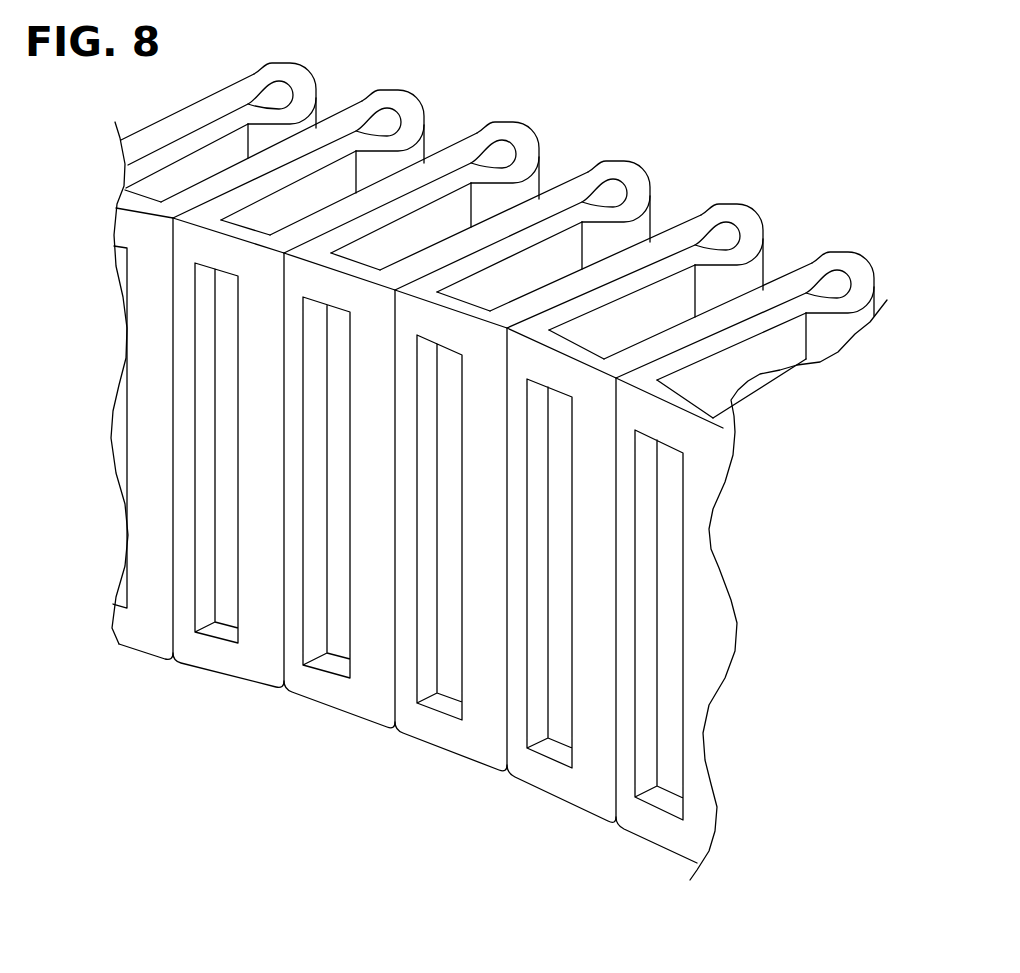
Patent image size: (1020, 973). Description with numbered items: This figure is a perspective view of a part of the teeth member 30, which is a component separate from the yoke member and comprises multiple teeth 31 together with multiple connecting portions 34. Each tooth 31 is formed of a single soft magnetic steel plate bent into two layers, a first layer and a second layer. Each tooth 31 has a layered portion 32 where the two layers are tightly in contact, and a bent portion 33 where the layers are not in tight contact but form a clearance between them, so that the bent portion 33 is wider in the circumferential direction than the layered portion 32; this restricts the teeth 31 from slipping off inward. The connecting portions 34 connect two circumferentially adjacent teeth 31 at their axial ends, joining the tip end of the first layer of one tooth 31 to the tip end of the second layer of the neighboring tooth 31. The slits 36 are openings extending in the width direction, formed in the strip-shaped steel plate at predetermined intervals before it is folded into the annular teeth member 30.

The teeth member 30 is at (499, 467).
The teeth 31 is at (497, 237).
The layered portion 32 is at (515, 222).
The bent portion 33 is at (598, 107).
The connecting portions 34 is at (327, 287).
The slits 36 is at (306, 650).